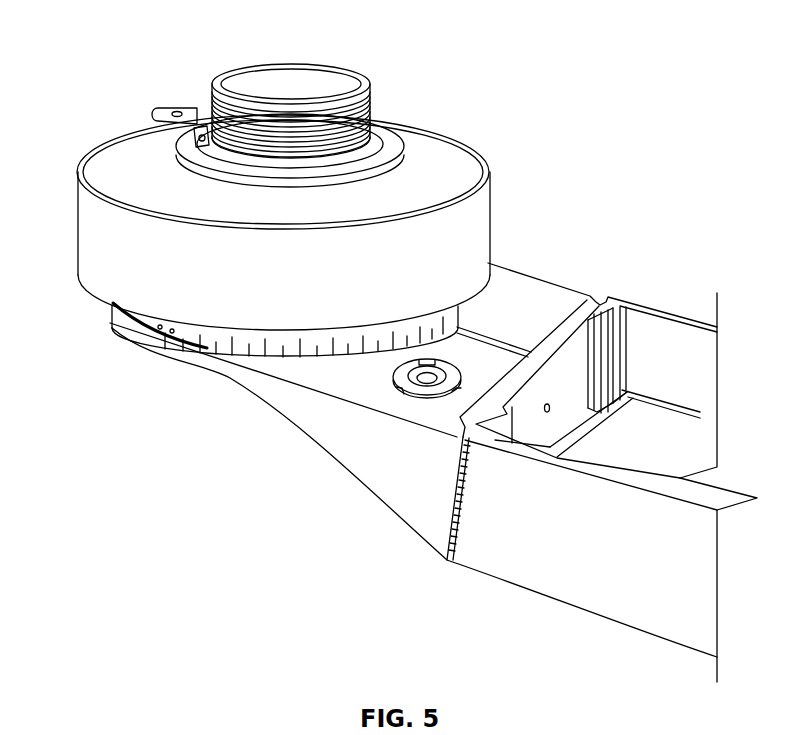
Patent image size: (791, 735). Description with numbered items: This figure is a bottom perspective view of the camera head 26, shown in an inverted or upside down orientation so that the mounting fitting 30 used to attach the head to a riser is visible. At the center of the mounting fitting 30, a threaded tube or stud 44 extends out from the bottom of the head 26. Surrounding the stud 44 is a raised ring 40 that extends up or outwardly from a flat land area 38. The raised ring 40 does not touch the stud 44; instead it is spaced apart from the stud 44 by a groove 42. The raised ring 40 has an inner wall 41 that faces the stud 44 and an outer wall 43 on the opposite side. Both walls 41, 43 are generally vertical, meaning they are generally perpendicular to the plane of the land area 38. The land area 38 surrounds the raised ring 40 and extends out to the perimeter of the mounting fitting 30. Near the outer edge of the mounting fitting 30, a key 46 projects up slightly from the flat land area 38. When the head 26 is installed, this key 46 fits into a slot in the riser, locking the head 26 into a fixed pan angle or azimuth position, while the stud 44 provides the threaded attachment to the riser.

The head 26 is at (334, 487).
The mounting fitting 30 is at (88, 295).
The land area 38 is at (468, 166).
The raised ring 40 is at (185, 143).
The inner wall 41 is at (388, 140).
The groove 42 is at (200, 147).
The outer wall 43 is at (397, 176).
The threaded tube or stud 44 is at (372, 100).
The key 46 is at (176, 110).